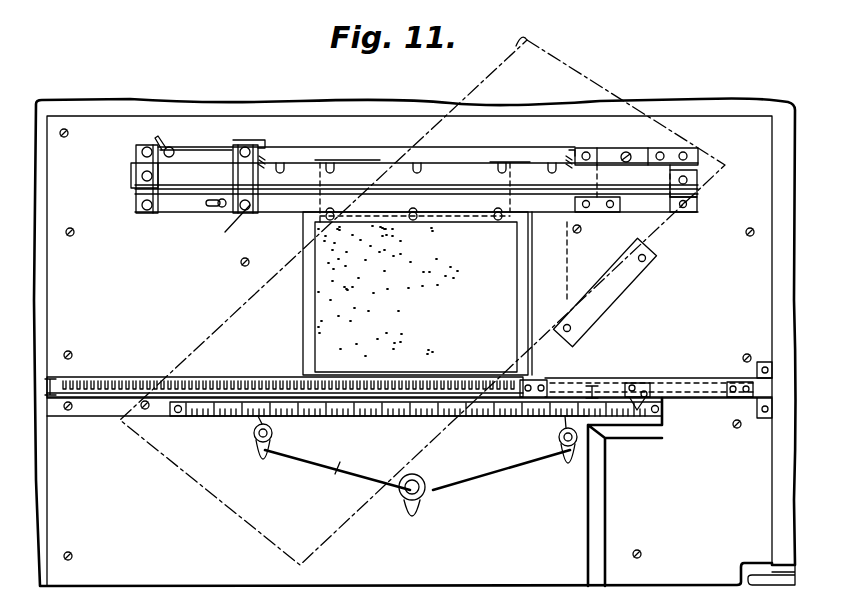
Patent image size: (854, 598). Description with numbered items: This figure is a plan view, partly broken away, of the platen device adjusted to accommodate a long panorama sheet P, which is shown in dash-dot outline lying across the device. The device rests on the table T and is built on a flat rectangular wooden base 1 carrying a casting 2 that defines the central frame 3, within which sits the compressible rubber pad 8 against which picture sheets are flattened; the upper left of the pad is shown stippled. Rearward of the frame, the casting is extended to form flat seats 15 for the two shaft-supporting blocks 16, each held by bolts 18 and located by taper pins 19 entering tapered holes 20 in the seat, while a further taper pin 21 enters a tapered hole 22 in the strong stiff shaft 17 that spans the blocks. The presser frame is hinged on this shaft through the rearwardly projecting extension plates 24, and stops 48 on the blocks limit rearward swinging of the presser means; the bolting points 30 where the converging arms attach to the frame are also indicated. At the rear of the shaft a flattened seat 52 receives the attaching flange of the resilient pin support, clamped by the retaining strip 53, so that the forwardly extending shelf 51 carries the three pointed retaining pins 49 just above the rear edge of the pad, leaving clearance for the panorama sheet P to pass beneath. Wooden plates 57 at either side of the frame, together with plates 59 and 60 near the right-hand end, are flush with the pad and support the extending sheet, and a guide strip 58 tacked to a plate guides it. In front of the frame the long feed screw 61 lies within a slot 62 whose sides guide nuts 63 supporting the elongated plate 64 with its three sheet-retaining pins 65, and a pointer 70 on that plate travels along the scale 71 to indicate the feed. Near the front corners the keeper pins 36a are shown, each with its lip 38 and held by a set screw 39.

The table T is at (126, 101).
The panorama sheet P is at (422, 289).
The base 1 is at (200, 122).
The casting 2 is at (268, 241).
The central frame 3 is at (307, 298).
The rubber pad 8 is at (322, 318).
The seats 15 is at (634, 152).
The shaft-supporting blocks 16 is at (216, 150).
The shaft 17 is at (445, 182).
The bolts 18 is at (141, 152).
The taper pins 19 is at (172, 149).
The tapered holes 20 is at (664, 154).
The taper pin 21 is at (141, 176).
The tapered hole 22 is at (687, 180).
The extension plates 24 is at (278, 157).
The bolting 30 is at (475, 165).
The keeper pins 36a is at (256, 446).
The lip 38 is at (423, 481).
The set screw 39 is at (421, 506).
The stops 48 is at (262, 140).
The retaining pins 49 is at (332, 220).
The shelf 51 is at (438, 222).
The seat 52 is at (500, 160).
The retaining strip 53 is at (388, 160).
The plates 57 is at (403, 289).
The guide strips 58 is at (596, 306).
The wooden plate 59 is at (782, 308).
The wooden plate 60 is at (656, 492).
The feed screw 61 is at (130, 380).
The slot 62 is at (120, 415).
The nuts 63 is at (633, 385).
The elongated plate 64 is at (696, 385).
The sheet-retaining pins 65 is at (545, 385).
The pointer 70 is at (637, 411).
The scale 71 is at (336, 417).